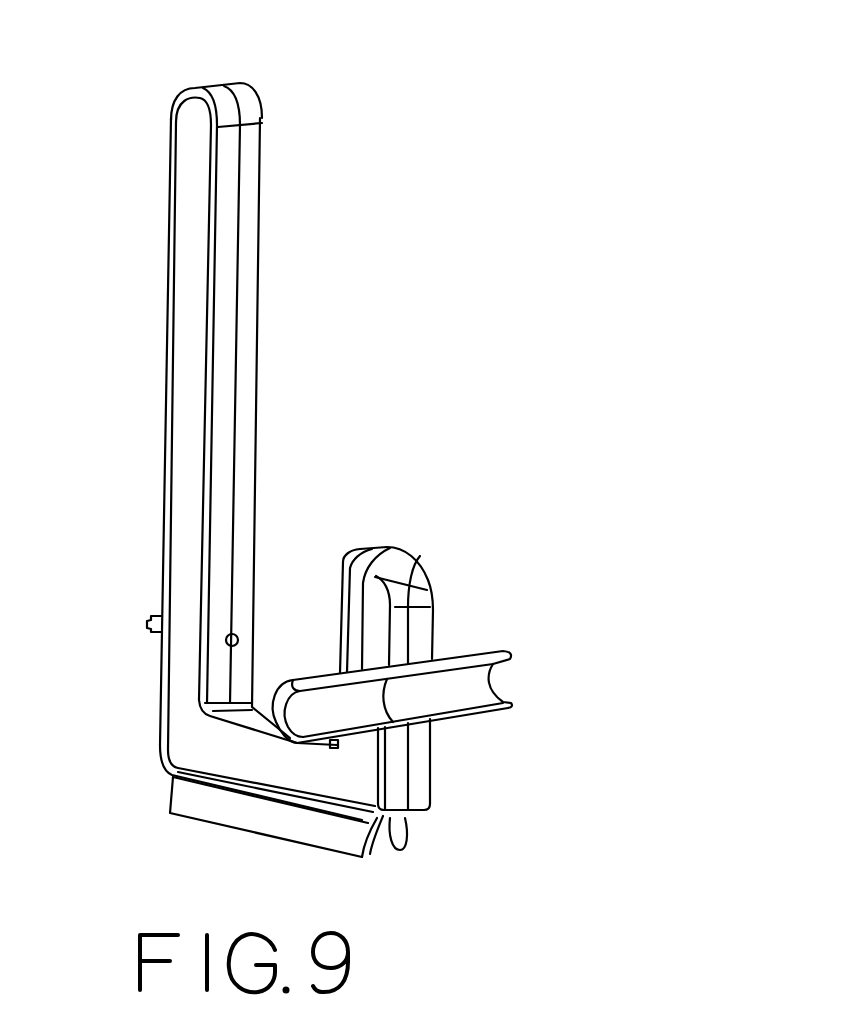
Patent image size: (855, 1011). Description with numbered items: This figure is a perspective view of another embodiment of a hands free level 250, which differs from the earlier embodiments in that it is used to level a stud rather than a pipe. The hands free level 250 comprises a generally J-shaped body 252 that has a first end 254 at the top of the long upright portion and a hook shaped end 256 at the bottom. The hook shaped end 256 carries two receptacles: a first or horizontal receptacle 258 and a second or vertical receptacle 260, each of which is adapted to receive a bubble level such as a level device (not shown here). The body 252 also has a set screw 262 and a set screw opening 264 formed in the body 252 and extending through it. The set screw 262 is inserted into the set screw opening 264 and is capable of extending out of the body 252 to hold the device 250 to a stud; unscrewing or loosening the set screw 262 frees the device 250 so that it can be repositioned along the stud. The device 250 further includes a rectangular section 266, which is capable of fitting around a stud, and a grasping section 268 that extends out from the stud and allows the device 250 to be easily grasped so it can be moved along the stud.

The hands free level 250 is at (413, 220).
The J-shaped body 252 is at (288, 393).
The first end 254 is at (245, 100).
The hook shaped end 256 is at (392, 562).
The first or horizontal receptacle 258 is at (250, 815).
The second or vertical receptacle 260 is at (463, 683).
The set screw 262 is at (147, 621).
The set screw opening 264 is at (238, 640).
The rectangular section 266 is at (298, 647).
The grasping section 268 is at (190, 278).